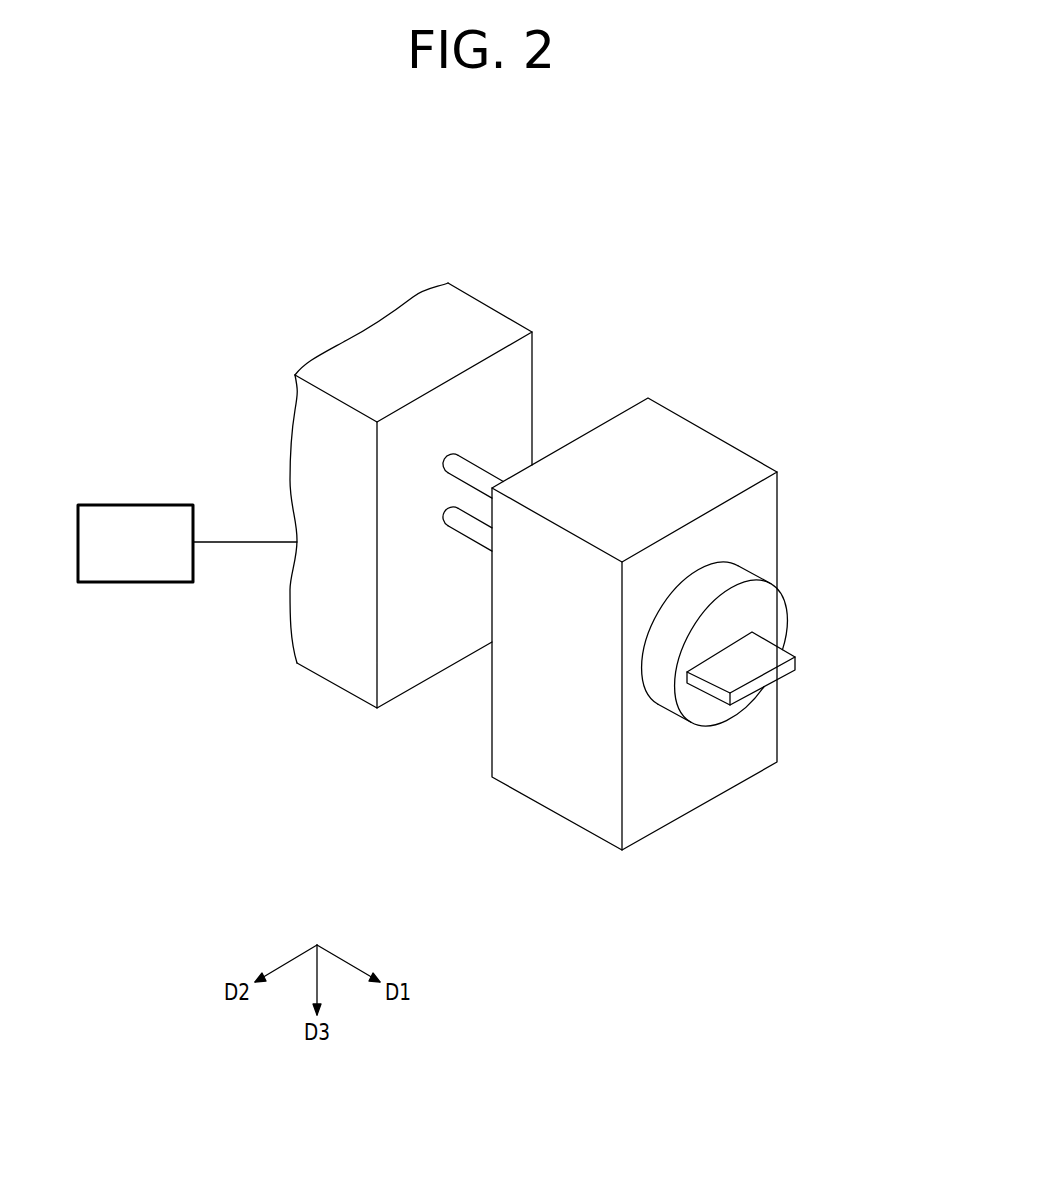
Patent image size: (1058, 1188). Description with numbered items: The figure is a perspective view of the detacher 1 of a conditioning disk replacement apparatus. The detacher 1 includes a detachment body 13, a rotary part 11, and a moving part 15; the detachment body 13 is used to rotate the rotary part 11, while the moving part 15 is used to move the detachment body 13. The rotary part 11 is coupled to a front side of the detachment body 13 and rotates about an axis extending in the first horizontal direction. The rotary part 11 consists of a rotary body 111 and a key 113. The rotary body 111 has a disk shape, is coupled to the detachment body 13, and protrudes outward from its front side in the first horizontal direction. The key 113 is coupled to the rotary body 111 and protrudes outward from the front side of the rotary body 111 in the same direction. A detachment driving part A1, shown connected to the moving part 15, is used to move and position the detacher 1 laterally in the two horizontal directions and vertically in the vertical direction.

The detacher 1 is at (765, 237).
The rotary part 11 is at (878, 605).
The rotary body 111 is at (772, 612).
The key 113 is at (797, 667).
The detachment body 13 is at (688, 450).
The moving part 15 is at (467, 320).
The detachment driving part A1 is at (152, 504).